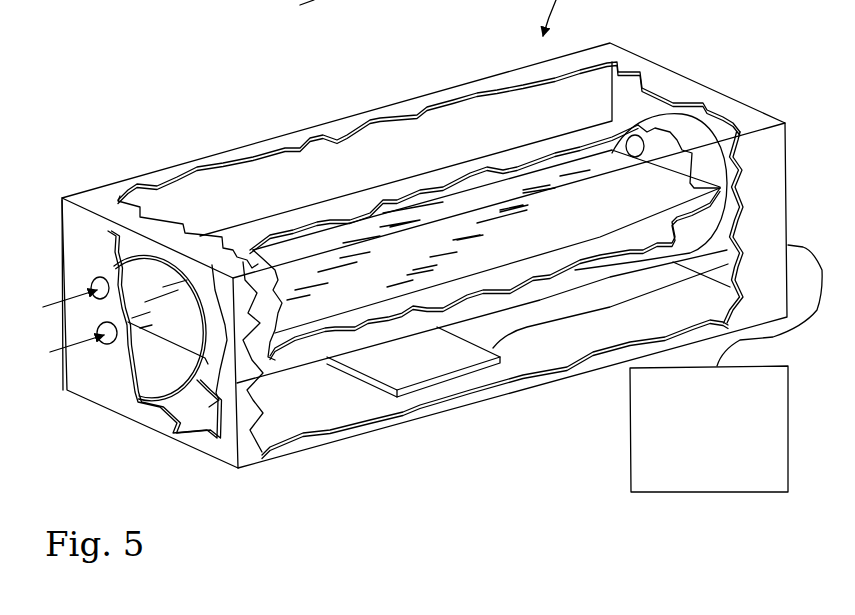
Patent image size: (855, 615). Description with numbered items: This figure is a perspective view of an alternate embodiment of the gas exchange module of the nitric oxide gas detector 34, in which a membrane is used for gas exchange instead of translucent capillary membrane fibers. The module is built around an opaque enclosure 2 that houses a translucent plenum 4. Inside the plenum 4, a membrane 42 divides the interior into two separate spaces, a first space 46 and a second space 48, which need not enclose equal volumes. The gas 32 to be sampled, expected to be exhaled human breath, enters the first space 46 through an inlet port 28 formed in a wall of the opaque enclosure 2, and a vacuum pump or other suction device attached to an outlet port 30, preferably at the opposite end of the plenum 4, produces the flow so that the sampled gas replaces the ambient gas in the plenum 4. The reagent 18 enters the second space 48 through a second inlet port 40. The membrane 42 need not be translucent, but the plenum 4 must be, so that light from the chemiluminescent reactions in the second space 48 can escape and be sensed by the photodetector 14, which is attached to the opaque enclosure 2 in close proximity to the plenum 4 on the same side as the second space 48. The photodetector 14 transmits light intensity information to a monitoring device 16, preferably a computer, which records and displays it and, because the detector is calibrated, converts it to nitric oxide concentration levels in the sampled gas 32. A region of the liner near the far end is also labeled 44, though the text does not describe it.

The opaque enclosure 2 is at (89, 198).
The plenum 4 is at (245, 237).
The photodetector 14 is at (417, 366).
The monitoring device 16 is at (726, 437).
The reagent 18 is at (102, 345).
The inlet port 28 is at (62, 236).
The outlet port 30 is at (635, 135).
The gas 32 is at (68, 316).
The nitric oxide gas detector 34 is at (294, 10).
The second inlet port 40 is at (110, 350).
The membrane 42 is at (378, 247).
The liner end flap 44 is at (673, 218).
The first space 46 is at (478, 182).
The second space 48 is at (366, 314).